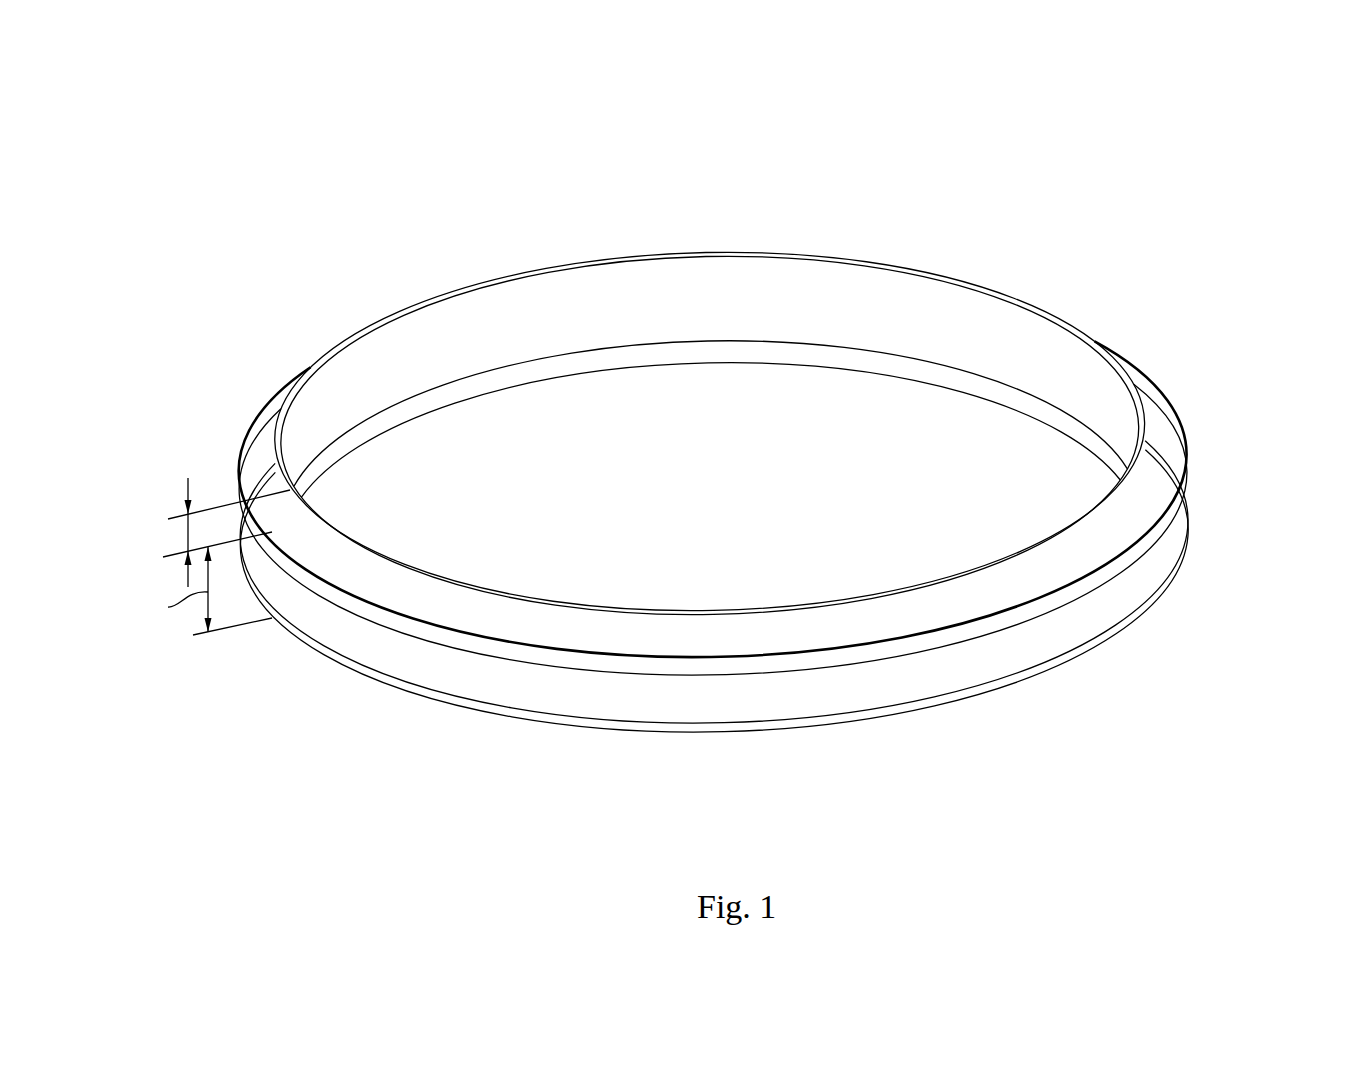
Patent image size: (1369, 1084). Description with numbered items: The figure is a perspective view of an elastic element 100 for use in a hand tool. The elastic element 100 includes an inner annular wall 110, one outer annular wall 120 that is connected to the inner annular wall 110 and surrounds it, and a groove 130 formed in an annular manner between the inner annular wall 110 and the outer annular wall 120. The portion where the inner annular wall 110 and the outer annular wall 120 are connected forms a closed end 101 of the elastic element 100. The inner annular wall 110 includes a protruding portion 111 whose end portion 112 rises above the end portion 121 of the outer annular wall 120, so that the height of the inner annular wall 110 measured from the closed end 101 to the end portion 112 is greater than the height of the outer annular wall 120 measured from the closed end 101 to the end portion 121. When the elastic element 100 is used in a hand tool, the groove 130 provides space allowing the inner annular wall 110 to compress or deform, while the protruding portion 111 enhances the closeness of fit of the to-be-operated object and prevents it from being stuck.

The elastic element 100 is at (118, 105).
The inner annular wall 110 is at (602, 284).
The end portion of the protruding portion 112 is at (695, 253).
The protruding portion 111 is at (413, 597).
The closed end 101 is at (817, 372).
The groove 130 is at (1157, 446).
The end portion of the outer annular wall 121 is at (1183, 480).
The outer annular wall 120 is at (1163, 567).